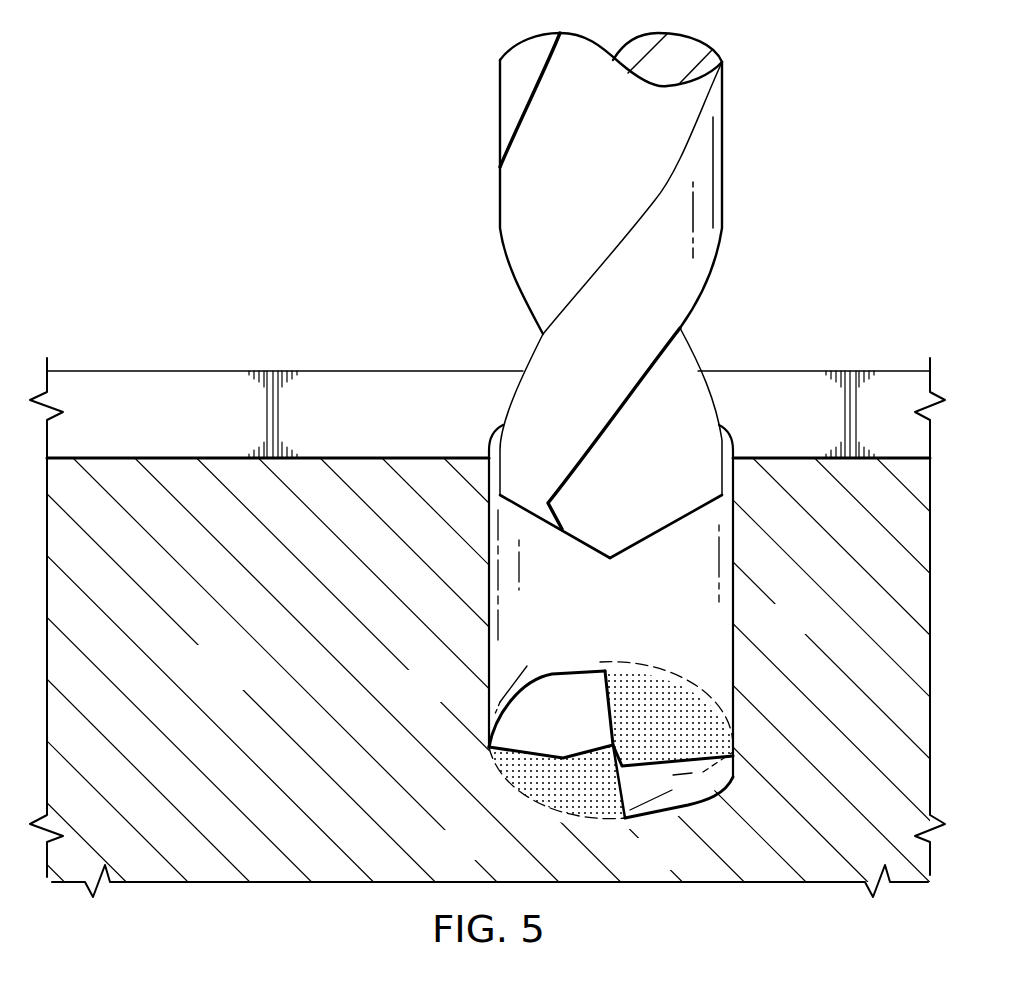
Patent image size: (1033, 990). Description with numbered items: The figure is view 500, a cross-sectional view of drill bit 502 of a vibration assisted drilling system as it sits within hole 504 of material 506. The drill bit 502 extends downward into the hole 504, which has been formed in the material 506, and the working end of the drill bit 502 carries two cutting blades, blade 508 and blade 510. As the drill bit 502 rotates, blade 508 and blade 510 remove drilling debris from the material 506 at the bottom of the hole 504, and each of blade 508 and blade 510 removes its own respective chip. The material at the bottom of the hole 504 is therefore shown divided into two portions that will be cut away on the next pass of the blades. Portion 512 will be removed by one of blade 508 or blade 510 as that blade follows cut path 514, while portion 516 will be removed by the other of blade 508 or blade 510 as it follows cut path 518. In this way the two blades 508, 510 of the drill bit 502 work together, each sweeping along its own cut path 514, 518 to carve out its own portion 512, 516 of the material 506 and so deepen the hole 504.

The view 500 is at (328, 131).
The drill bit 502 is at (724, 158).
The hole 504 is at (722, 634).
The material 506 is at (243, 685).
The blade 508 is at (585, 544).
The blade 510 is at (637, 544).
The portion 512 is at (516, 802).
The cut path 514 is at (513, 678).
The portion 516 is at (638, 676).
The cut path 518 is at (692, 776).